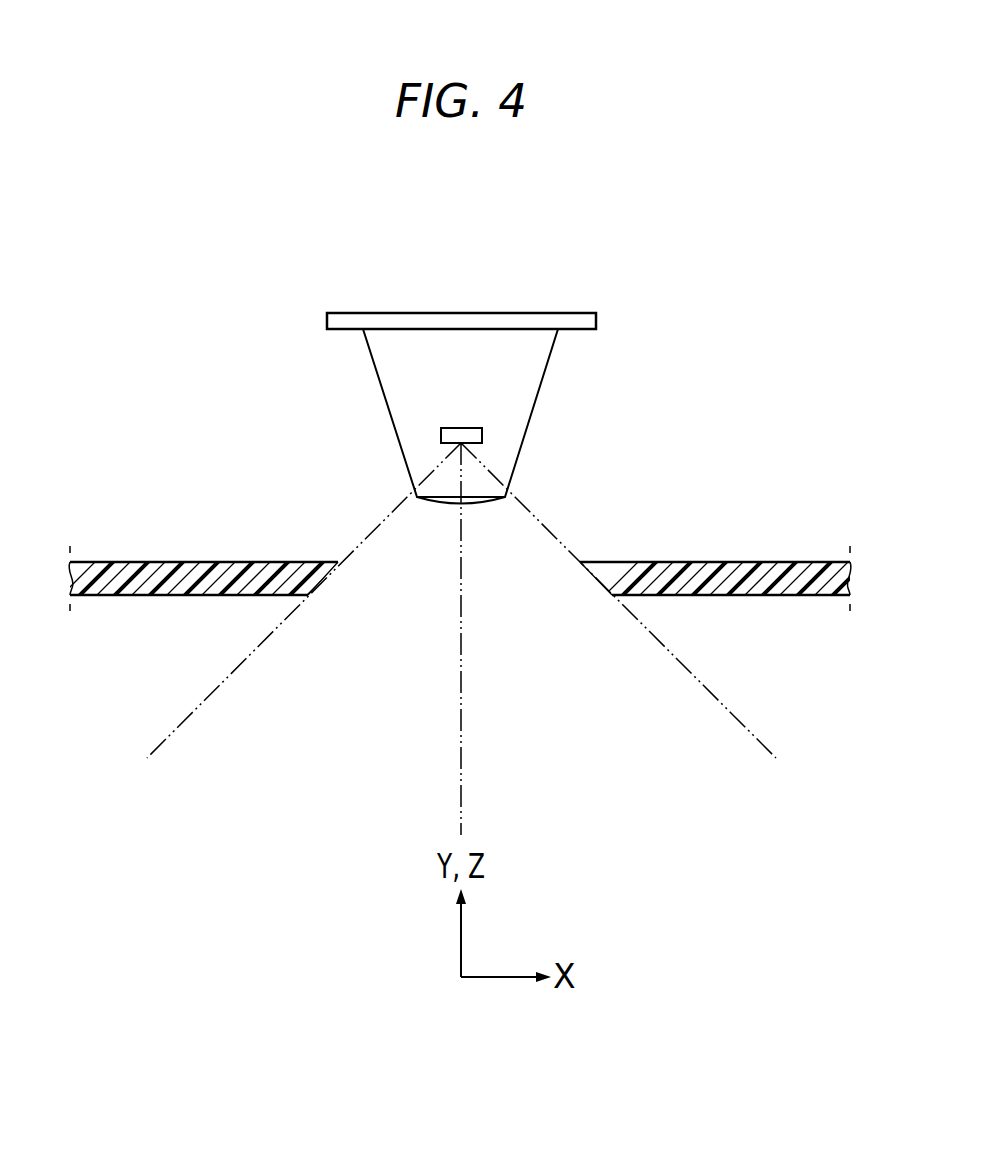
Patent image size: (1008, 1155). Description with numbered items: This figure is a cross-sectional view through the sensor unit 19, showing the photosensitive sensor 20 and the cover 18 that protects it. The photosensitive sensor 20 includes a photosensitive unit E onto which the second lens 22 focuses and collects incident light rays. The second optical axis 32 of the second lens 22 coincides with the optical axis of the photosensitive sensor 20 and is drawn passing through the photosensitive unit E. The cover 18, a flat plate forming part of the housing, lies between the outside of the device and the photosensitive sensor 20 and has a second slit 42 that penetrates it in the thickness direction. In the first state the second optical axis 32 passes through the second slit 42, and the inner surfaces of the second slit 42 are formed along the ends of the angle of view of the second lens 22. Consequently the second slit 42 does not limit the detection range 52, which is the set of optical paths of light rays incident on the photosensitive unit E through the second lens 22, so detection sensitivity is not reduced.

The sensor unit 19 is at (686, 248).
The photosensitive sensor 20 is at (532, 290).
The photosensitive unit E is at (451, 412).
The second lens 22 is at (441, 503).
The cover 18 is at (197, 577).
The second slit 42 is at (325, 584).
The detection range 52 is at (683, 663).
The second optical axis 32 is at (461, 743).